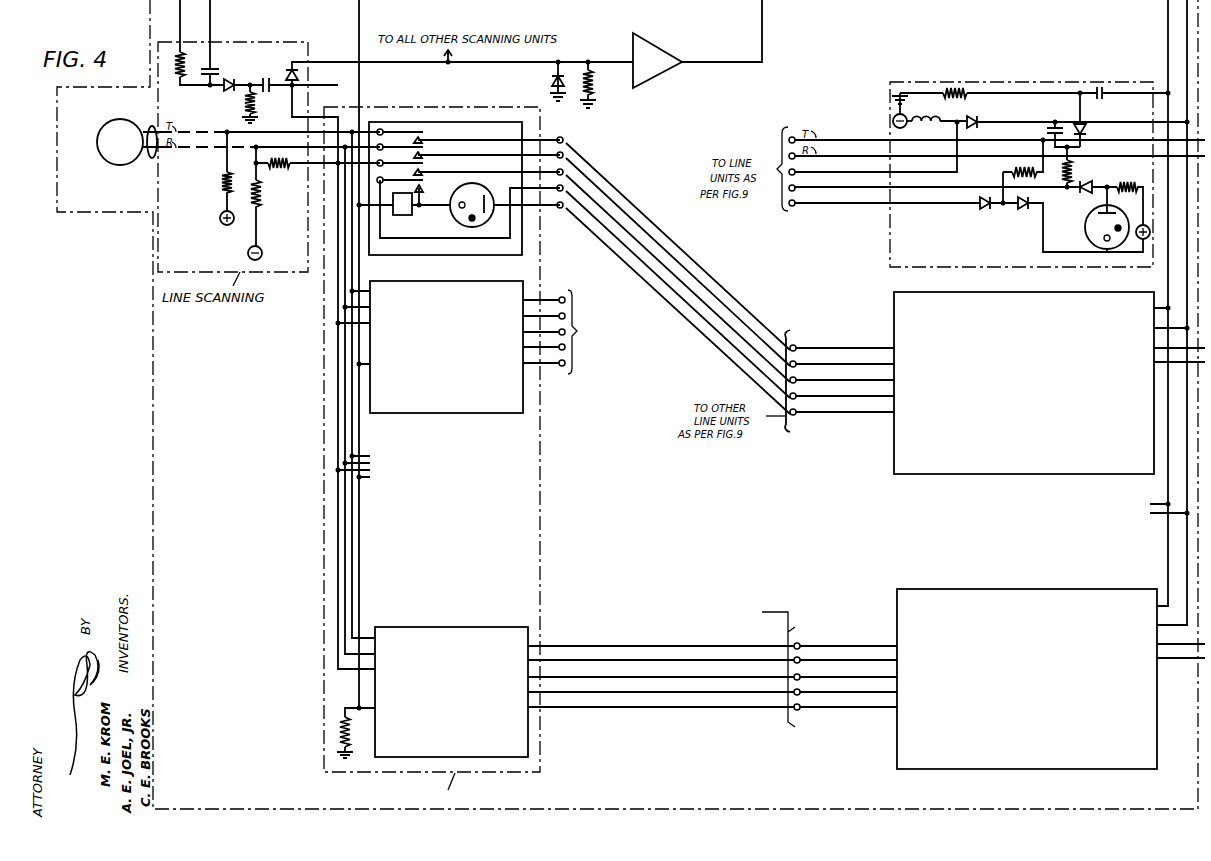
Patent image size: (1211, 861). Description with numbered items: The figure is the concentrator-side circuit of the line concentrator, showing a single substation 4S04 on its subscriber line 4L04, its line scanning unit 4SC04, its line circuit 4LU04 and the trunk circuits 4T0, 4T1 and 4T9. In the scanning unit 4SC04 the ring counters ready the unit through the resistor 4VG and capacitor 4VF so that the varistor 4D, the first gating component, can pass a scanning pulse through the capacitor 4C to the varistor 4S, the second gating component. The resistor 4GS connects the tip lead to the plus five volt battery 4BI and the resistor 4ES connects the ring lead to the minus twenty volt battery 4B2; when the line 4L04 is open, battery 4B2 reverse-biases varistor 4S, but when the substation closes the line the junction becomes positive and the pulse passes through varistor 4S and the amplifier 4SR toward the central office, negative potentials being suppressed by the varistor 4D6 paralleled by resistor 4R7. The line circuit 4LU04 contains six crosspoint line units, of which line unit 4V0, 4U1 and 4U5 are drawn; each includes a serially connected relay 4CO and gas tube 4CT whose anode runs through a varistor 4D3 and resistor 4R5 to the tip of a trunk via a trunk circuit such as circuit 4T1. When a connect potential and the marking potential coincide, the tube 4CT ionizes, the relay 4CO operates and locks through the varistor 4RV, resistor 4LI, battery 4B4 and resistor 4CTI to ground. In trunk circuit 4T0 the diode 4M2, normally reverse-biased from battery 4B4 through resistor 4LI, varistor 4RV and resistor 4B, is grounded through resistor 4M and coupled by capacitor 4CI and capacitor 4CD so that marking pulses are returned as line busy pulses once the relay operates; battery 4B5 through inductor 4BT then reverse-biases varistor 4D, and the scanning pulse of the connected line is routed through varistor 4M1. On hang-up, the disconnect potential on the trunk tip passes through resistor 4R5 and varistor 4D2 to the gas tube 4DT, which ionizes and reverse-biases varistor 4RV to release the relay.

The substation 4S04 is at (103, 159).
The subscriber line 4L04 is at (154, 160).
The resistor 4VG is at (180, 78).
The capacitor 4VF is at (213, 70).
The varistor 4D is at (229, 90).
The capacitor 4C is at (267, 77).
The varistor 4S is at (299, 74).
The resistor 4GS is at (221, 178).
The battery 4BI is at (220, 215).
The resistor 4ES is at (260, 197).
The battery 4B2 is at (248, 254).
The inductor 4BT is at (279, 169).
The line scanning unit 4SC04 is at (220, 296).
The varistor 4D6 is at (551, 78).
The resistor 4R7 is at (595, 88).
The amplifier 4SR is at (658, 80).
The line unit 4V0 is at (510, 122).
The relay 4CO is at (403, 216).
The gas tube 4CT is at (468, 220).
The trunk circuit 4T1 is at (1024, 383).
The trunk circuit 4T9 is at (1027, 679).
The line unit 4U1 is at (491, 379).
The line unit 4U5 is at (636, 675).
The resistor 4CTI is at (338, 730).
The line circuit 4LU04 is at (402, 790).
The trunk circuit 4T0 is at (1115, 82).
The battery 4B5 is at (893, 105).
The resistor 4M is at (965, 97).
The varistor 4M1 is at (972, 124).
The capacitor 4CD is at (1051, 126).
The capacitor 4CI is at (1100, 99).
The diode 4M2 is at (1087, 130).
The resistor 4R5 is at (1020, 166).
The varistor 4RV is at (1073, 173).
The resistor 4B is at (1079, 190).
The resistor 4LI is at (1131, 181).
The varistor 4D3 is at (985, 210).
The varistor 4D2 is at (1023, 210).
The gas tube 4DT is at (1086, 232).
The battery 4B4 is at (1140, 240).